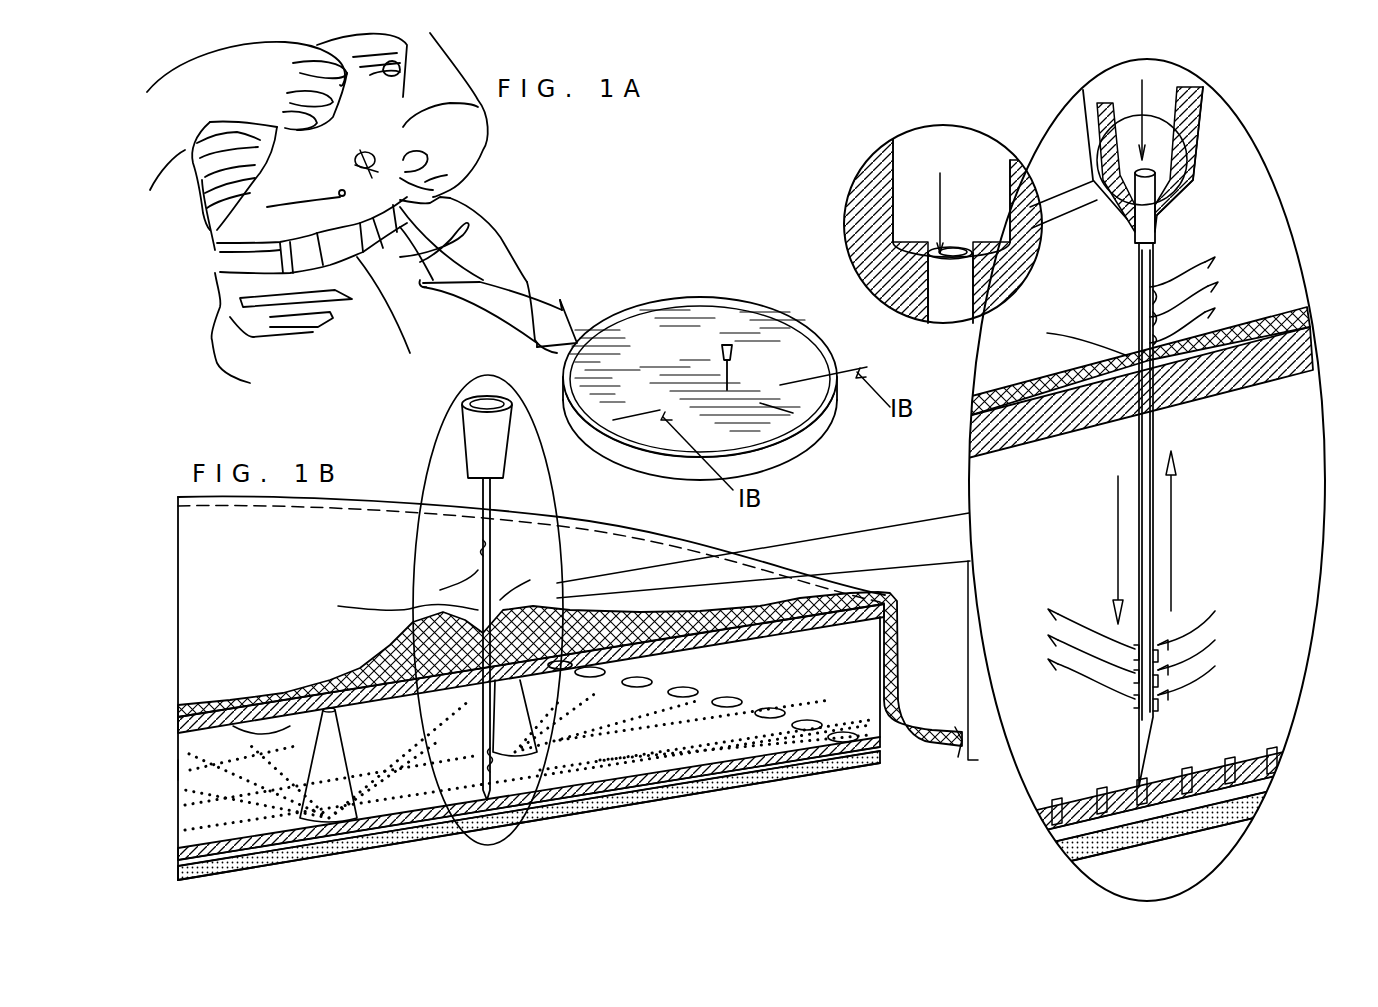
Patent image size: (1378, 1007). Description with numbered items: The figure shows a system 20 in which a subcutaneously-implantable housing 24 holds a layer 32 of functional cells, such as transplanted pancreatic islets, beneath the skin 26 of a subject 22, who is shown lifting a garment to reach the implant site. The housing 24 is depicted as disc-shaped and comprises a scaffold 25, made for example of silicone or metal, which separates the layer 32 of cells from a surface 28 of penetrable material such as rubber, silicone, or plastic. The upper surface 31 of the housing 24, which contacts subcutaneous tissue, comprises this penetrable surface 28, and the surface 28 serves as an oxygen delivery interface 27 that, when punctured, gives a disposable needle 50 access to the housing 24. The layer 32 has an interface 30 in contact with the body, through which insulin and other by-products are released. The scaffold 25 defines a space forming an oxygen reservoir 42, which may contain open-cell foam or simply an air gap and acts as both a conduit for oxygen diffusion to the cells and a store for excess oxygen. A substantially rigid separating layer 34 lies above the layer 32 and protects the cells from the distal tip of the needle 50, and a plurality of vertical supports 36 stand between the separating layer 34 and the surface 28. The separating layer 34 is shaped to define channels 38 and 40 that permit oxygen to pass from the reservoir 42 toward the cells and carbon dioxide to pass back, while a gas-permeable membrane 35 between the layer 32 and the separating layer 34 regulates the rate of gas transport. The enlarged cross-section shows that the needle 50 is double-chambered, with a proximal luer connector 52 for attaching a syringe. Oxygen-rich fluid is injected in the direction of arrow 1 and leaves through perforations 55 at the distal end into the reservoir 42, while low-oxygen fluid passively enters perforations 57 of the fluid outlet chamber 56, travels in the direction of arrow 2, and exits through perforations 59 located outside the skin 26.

In FIG. 1B, the arrow 1 is at (1115, 530).
In FIG. 1B, the arrow 2 is at (1174, 530).
In FIG. 1A, the system 20 is at (727, 200).
In FIG. 1A, the subject 22 is at (200, 262).
In FIG. 1A, the housing 24 is at (335, 153).
In FIG. 1B, the housing 24 is at (165, 758).
In FIG. 1B, the scaffold 25 is at (880, 748).
In FIG. 1B, the skin 26 is at (945, 748).
In FIG. 1A, the oxygen delivery interface 27 is at (793, 413).
In FIG. 1A, the surface 28 is at (680, 342).
In FIG. 1B, the surface 28 is at (178, 733).
In FIG. 1B, the interface 30 is at (213, 880).
In FIG. 1A, the upper surface 31 is at (773, 353).
In FIG. 1B, the layer of functional cells 32 is at (178, 876).
In FIG. 1B, the separating layer 34 is at (178, 855).
In FIG. 1B, the gas-permeable membrane 35 is at (178, 863).
In FIG. 1B, the vertical supports 36 is at (330, 820).
In FIG. 1B, the channels 38 is at (640, 790).
In FIG. 1B, the channels 40 is at (807, 728).
In FIG. 1B, the oxygen reservoir 42 is at (825, 685).
In FIG. 1B, the needle 50 is at (455, 480).
In FIG. 1A, the luer connector 52 is at (727, 343).
In FIG. 1B, the luer connector 52 is at (462, 412).
In FIG. 1B, the perforations 55 is at (1130, 695).
In FIG. 1B, the fluid outlet chamber 56 is at (1160, 418).
In FIG. 1B, the perforations 57 is at (1160, 700).
In FIG. 1B, the perforations 59 is at (1172, 262).